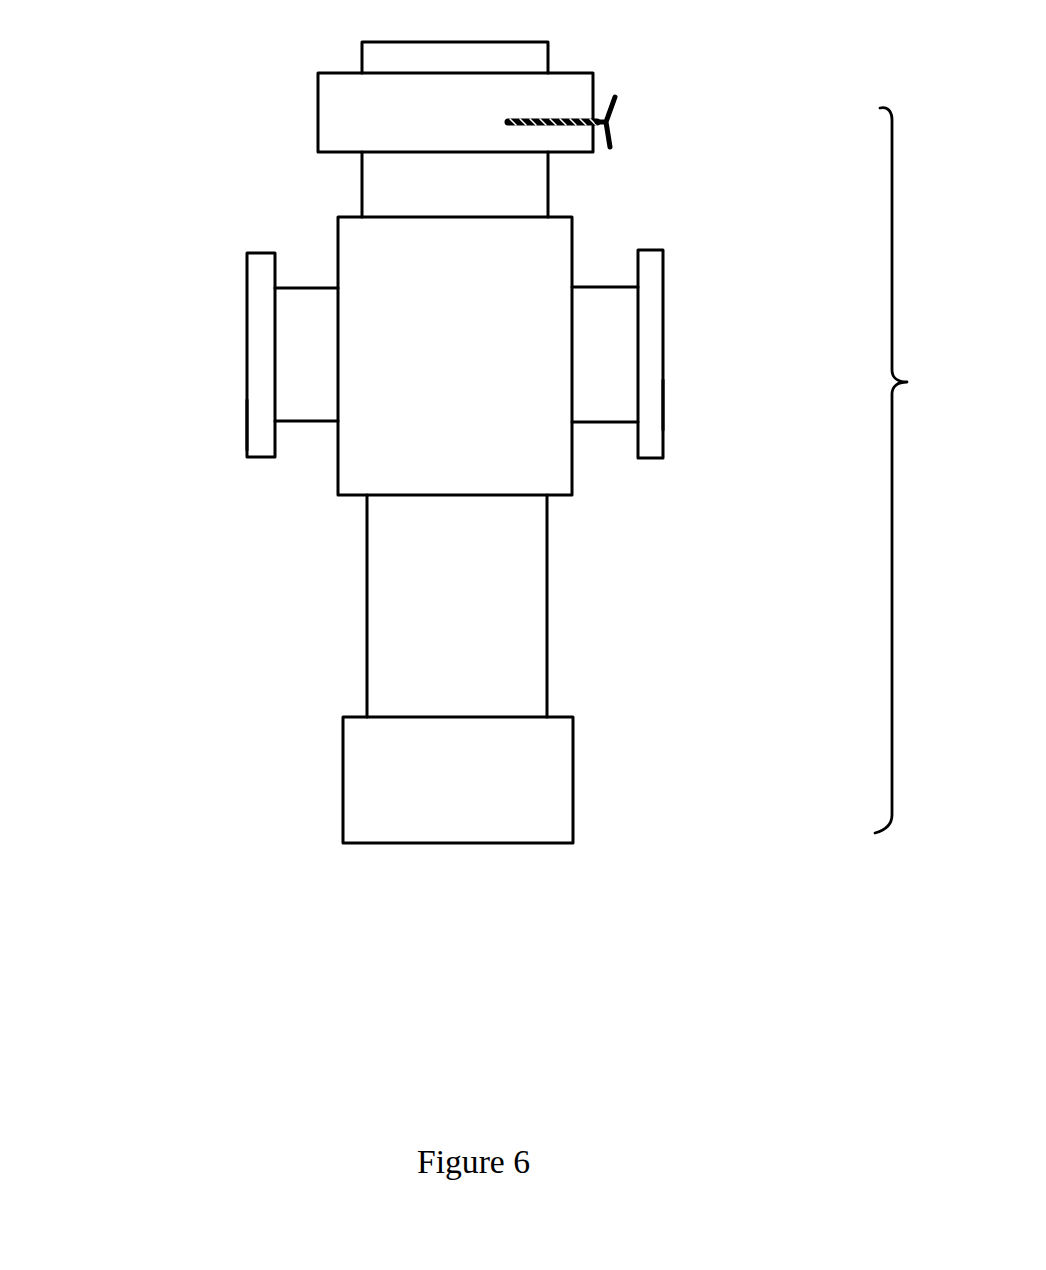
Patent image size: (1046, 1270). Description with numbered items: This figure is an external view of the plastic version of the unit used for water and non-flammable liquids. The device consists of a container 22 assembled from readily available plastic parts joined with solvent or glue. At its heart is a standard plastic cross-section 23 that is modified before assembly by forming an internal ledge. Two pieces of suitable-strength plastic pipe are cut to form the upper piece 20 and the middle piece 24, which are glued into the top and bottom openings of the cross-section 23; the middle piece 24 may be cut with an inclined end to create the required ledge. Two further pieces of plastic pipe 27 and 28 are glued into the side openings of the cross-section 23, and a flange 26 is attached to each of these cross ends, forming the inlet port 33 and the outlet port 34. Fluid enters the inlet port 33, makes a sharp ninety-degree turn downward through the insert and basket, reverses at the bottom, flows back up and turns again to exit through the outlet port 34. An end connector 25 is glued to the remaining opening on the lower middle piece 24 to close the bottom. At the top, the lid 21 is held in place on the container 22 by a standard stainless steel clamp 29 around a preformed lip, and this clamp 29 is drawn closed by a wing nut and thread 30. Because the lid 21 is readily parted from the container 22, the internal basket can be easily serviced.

The upper piece 20 is at (555, 185).
The lid 21 is at (555, 55).
The container 22 is at (918, 470).
The cross-section 23 is at (343, 475).
The middle piece 24 is at (547, 627).
The end connector 25 is at (578, 767).
The flange 26 is at (263, 373).
The plastic pipe 27 is at (297, 327).
The plastic pipe 28 is at (608, 360).
The clamp band 29 is at (595, 88).
The wing nut and thread 30 is at (612, 142).
The inlet port 33 is at (238, 405).
The outlet port 34 is at (682, 400).